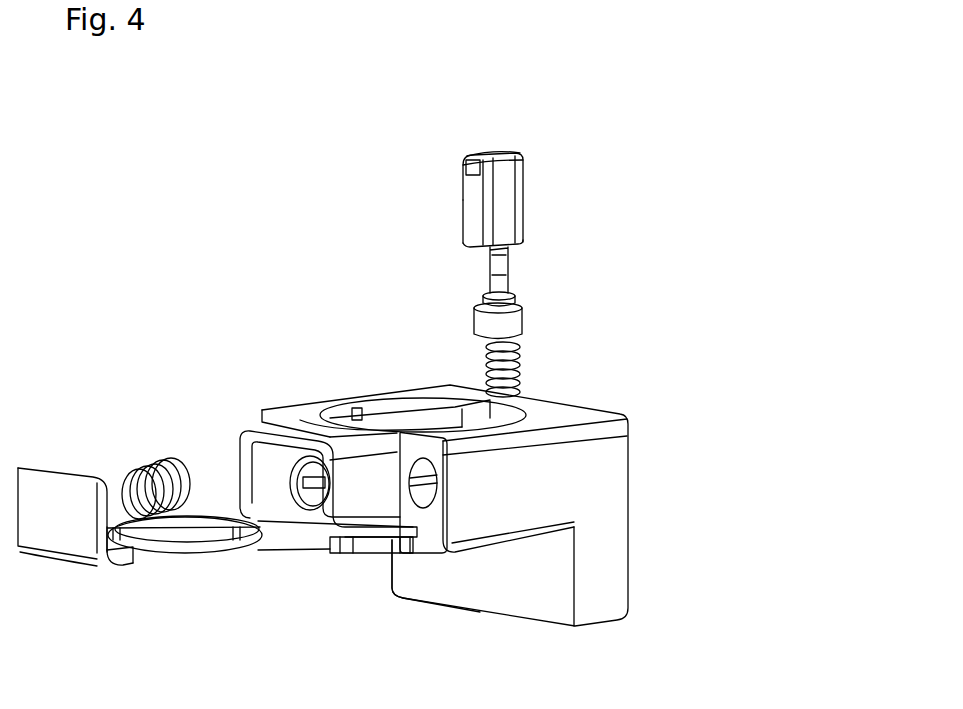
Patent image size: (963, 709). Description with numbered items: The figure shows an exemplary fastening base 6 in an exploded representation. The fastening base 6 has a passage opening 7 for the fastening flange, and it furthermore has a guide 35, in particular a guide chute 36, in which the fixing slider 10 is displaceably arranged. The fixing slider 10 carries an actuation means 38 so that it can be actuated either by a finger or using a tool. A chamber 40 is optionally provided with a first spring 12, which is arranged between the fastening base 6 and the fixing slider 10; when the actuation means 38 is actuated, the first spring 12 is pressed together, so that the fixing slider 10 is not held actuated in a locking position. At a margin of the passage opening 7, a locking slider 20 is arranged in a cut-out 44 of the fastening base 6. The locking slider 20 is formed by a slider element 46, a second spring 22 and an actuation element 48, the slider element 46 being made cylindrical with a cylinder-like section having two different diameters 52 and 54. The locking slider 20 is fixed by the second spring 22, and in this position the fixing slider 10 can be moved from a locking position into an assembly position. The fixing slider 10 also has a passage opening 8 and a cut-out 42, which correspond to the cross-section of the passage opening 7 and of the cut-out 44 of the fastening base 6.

The fastening base 6 is at (618, 588).
The passage opening 7 is at (390, 413).
The passage opening 8 is at (148, 557).
The fixing slider 10 is at (186, 555).
The first spring 12 is at (180, 500).
The locking slider 20 is at (587, 275).
The second spring 22 is at (518, 343).
The guide 35 is at (417, 528).
The guide chute 36 is at (410, 533).
The actuation means 38 is at (82, 567).
The chamber 40 is at (270, 453).
The cut-out 42 is at (267, 528).
The cut-out 44 is at (490, 380).
The slider element 46 is at (508, 265).
The actuation element 48 is at (522, 173).
The diameter 52 is at (502, 297).
The diameter 54 is at (502, 258).